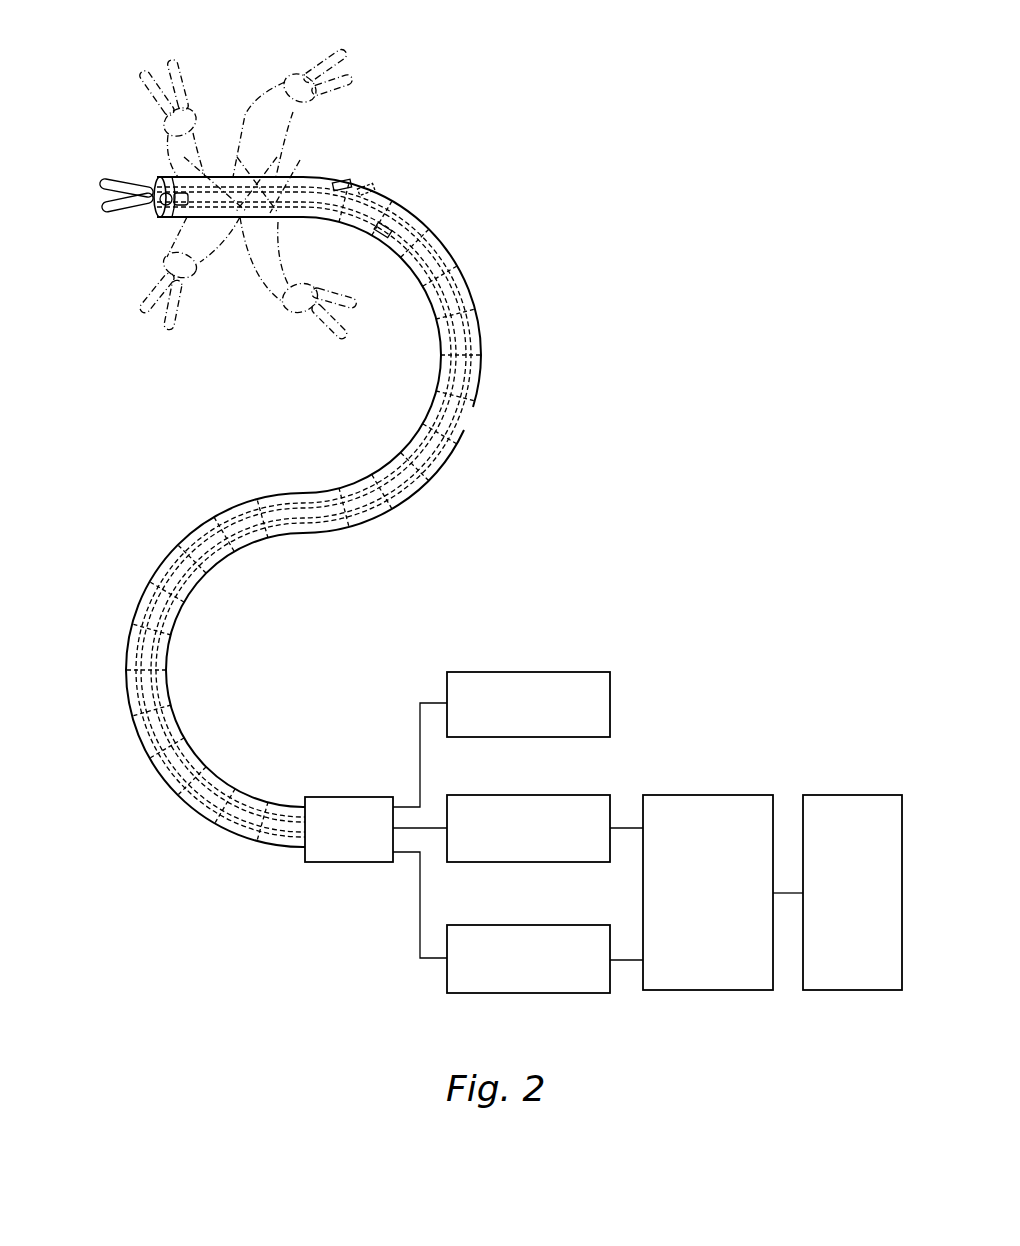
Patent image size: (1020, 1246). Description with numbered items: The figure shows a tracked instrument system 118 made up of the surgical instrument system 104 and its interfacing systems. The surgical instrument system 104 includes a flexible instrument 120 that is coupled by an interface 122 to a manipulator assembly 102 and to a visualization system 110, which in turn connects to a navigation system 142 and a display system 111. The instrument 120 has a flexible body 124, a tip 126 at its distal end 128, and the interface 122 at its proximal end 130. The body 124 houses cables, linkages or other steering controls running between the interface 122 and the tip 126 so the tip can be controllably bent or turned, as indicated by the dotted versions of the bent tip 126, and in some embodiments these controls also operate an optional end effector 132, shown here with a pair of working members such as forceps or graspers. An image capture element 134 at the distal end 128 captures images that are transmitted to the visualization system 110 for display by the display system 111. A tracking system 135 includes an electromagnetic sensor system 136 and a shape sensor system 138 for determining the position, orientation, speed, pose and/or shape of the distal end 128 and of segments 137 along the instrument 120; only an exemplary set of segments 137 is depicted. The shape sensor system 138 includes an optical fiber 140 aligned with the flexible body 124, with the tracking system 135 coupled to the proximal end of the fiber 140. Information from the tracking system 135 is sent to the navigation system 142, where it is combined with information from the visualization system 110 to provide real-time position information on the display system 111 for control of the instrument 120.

The manipulator assembly 102 is at (530, 671).
The surgical instrument system 104 is at (453, 577).
The visualization system 110 is at (527, 863).
The display system 111 is at (870, 935).
The tracked instrument system 118 is at (623, 202).
The flexible instrument 120 is at (126, 673).
The interface 122 is at (348, 795).
The flexible body 124 is at (481, 326).
The tip 126 is at (305, 154).
The distal end 128 is at (95, 196).
The proximal end 130 is at (258, 867).
The end effector 132 is at (100, 182).
The image capture element 134 is at (160, 217).
The tracking system 135 is at (528, 995).
The electromagnetic sensor system 136 is at (343, 181).
The segments 137 is at (457, 272).
The shape sensor system 138 is at (465, 414).
The optical fiber 140 is at (372, 184).
The navigation system 142 is at (728, 935).